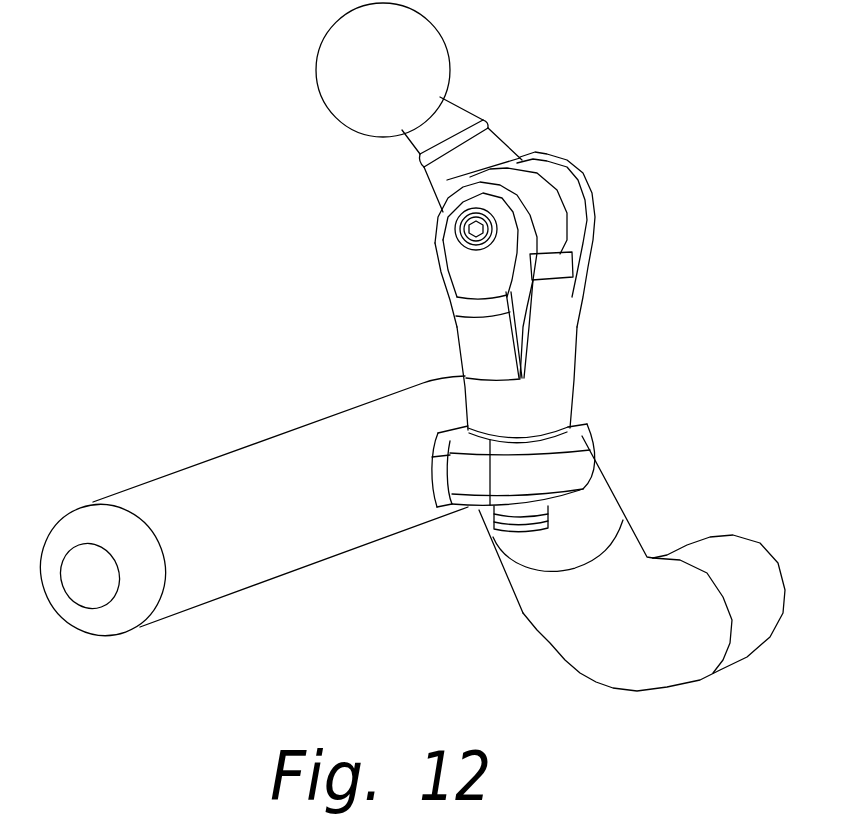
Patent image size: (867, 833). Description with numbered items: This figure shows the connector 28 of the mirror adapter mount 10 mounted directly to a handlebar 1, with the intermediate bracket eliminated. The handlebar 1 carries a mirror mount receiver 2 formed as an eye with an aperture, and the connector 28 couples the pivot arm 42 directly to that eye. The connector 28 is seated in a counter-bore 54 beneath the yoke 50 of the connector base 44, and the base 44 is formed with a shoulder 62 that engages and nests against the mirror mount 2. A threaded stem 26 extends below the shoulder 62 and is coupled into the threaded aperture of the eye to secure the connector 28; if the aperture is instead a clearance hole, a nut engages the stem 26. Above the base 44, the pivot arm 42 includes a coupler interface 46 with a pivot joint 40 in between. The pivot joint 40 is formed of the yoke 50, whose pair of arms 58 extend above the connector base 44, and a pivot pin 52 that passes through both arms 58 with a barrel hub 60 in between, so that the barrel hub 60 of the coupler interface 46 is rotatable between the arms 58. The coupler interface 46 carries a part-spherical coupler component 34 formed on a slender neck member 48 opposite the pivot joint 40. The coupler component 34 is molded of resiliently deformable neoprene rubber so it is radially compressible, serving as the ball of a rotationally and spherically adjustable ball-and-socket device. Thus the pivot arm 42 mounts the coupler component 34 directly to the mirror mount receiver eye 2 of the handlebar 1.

The handlebar 1 is at (236, 463).
The mirror mount receiver 2 is at (578, 442).
The mirror adapter mount 10 is at (346, 207).
The stem 26 is at (543, 528).
The connector 28 is at (488, 520).
The part-spherical coupler component 34 is at (335, 37).
The pivot joint 40 is at (588, 205).
The pivot arm 42 is at (462, 369).
The connector base 44 is at (558, 367).
The coupler interface 46 is at (508, 138).
The neck member 48 is at (445, 110).
The yoke 50 is at (438, 264).
The pivot pin 52 is at (455, 237).
The counter-bore 54 is at (575, 273).
The arms 58 is at (435, 213).
The barrel hub 60 is at (570, 205).
The shoulder 62 is at (590, 452).